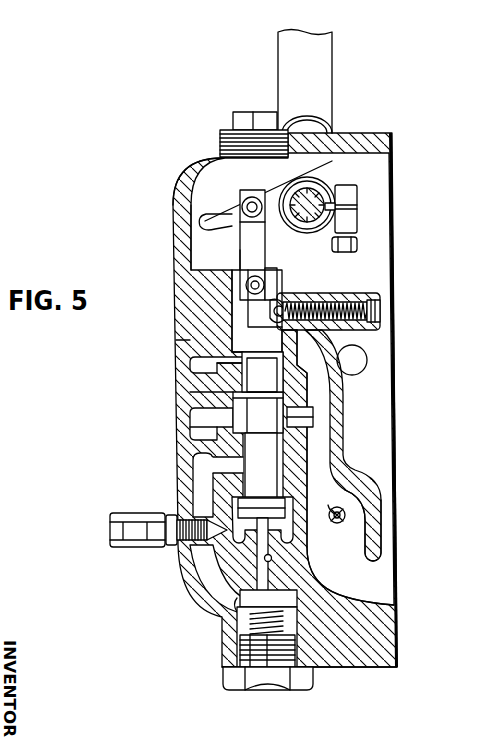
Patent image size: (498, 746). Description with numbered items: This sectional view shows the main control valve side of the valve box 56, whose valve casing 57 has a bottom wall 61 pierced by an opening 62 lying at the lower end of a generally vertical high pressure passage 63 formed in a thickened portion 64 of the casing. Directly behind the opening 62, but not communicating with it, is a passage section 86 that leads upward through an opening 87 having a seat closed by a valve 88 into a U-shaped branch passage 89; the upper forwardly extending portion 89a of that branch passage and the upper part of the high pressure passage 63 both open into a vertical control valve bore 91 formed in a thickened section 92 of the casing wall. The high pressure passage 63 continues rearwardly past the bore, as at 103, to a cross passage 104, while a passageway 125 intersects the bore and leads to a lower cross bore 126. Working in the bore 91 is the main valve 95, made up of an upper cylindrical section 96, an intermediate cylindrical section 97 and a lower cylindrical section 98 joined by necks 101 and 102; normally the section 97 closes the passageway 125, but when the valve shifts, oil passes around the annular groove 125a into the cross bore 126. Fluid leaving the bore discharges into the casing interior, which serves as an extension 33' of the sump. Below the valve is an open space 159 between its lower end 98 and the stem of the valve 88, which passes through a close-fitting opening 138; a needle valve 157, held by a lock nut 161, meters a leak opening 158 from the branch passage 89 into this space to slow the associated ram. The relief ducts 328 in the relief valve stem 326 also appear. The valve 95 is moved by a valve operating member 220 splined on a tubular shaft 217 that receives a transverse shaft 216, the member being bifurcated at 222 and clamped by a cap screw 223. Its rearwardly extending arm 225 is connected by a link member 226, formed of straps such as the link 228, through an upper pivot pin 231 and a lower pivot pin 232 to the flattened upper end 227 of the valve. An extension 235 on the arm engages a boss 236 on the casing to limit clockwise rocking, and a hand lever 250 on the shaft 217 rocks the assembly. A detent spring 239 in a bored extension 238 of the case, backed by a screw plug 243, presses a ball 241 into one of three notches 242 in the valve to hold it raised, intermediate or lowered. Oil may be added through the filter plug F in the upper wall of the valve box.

The hand lever 250 is at (338, 70).
The main valve operating member 220 is at (312, 162).
The filter plug F is at (243, 122).
The boss 236 is at (203, 155).
The tubular shaft 217 is at (314, 193).
The transverse shaft 216 is at (341, 185).
The bifurcated portion 222 is at (350, 224).
The clamping cap screw 223 is at (343, 252).
The arm 225 is at (270, 192).
The pivot pin 231 is at (243, 205).
The extension 235 is at (220, 221).
The valve casing 57 is at (183, 240).
The link 228 is at (253, 238).
The link member 226 is at (233, 259).
The pivot pin 232 is at (247, 284).
The upper flattened end 227 is at (278, 270).
The main control valve 95 is at (291, 274).
The detent ball 241 is at (286, 311).
The detent spring 239 is at (337, 303).
The bored extension 238 is at (355, 298).
The screw plug 243 is at (383, 310).
The valve box 56 is at (167, 314).
The upper cylindrical section 96 is at (182, 340).
The notches 242 is at (281, 331).
The thickened section 92 is at (303, 343).
The control valve bore 91 is at (190, 363).
The cross passage 104 is at (245, 376).
The neck 101 is at (237, 392).
The annular groove 125a is at (232, 415).
The cross bore 126 is at (197, 427).
The intermediate cylindrical section 97 is at (262, 398).
The high pressure passage extension 103 is at (258, 412).
The passageway 125 is at (300, 415).
The sump extension 33' is at (385, 364).
The thickened portion 64 is at (343, 437).
The upper portion of branch passage 89a is at (213, 463).
The neck 102 is at (257, 458).
The high pressure passage 63 is at (323, 478).
The lower cylindrical section 98 is at (248, 508).
The relief valve stem 326 is at (327, 498).
The relief ducts 328 is at (347, 515).
The needle valve 157 is at (190, 524).
The leak opening 158 is at (215, 532).
The lock nut 161 is at (120, 548).
The open space 159 is at (283, 528).
The stem opening 138 is at (272, 559).
The branch passage 89 is at (208, 563).
The valve 88 is at (263, 597).
The opening 87 is at (247, 598).
The passage section 86 is at (233, 625).
The opening 62 is at (385, 589).
The bottom wall 61 is at (352, 655).